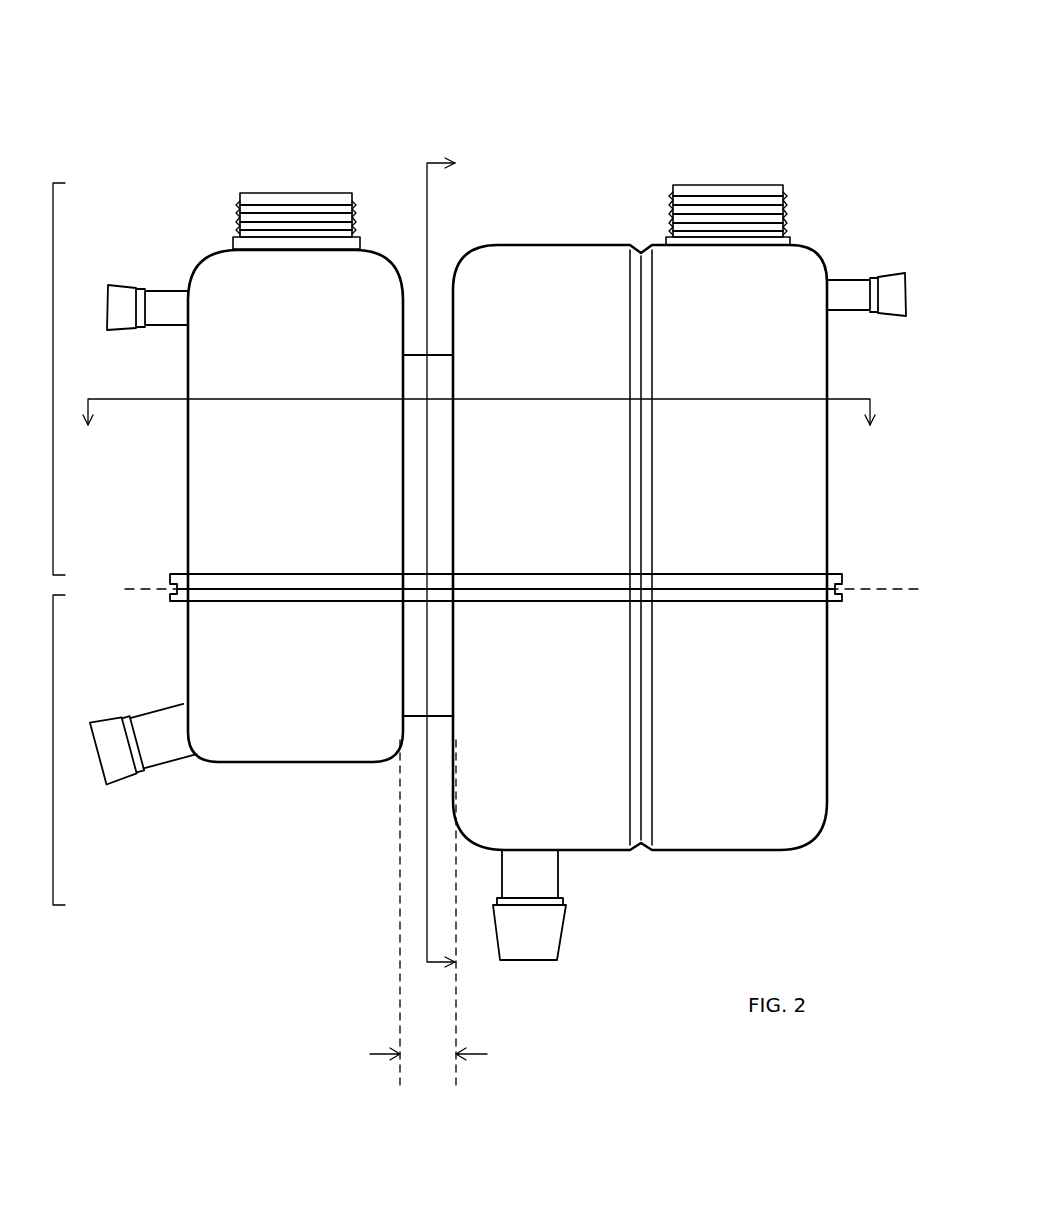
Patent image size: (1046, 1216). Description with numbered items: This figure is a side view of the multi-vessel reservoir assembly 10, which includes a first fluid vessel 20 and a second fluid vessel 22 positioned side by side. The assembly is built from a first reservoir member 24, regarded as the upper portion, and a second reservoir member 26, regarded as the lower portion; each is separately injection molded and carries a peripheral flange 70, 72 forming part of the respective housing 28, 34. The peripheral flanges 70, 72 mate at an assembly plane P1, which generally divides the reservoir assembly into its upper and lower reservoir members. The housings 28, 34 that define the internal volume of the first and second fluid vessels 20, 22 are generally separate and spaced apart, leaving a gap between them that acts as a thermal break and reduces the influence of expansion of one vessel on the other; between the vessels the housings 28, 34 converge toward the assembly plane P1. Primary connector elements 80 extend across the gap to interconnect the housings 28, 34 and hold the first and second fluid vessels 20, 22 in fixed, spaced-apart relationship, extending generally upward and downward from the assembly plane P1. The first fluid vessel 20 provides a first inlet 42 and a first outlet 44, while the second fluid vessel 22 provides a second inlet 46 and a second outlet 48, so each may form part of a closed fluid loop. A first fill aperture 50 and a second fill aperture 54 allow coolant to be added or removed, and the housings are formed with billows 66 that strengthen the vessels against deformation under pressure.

The multi-vessel reservoir assembly 10 is at (706, 66).
The first fluid vessel 20 is at (125, 125).
The second fluid vessel 22 is at (447, 125).
The first reservoir member 24 is at (53, 380).
The second reservoir member 26 is at (53, 748).
The housing of the first fluid vessel 28 is at (188, 442).
The housing of the second fluid vessel 34 is at (827, 484).
The first inlet 42 is at (178, 305).
The first outlet 44 is at (165, 750).
The second inlet 46 is at (852, 297).
The second outlet 48 is at (543, 882).
The first fill aperture 50 is at (293, 192).
The second fill aperture 54 is at (718, 185).
The billows 66 is at (643, 852).
The peripheral flange of the first reservoir member 70 is at (182, 574).
The peripheral flange of the second reservoir member 72 is at (185, 605).
The primary connector element 80 is at (412, 365).
The assembly plane P1 is at (855, 585).